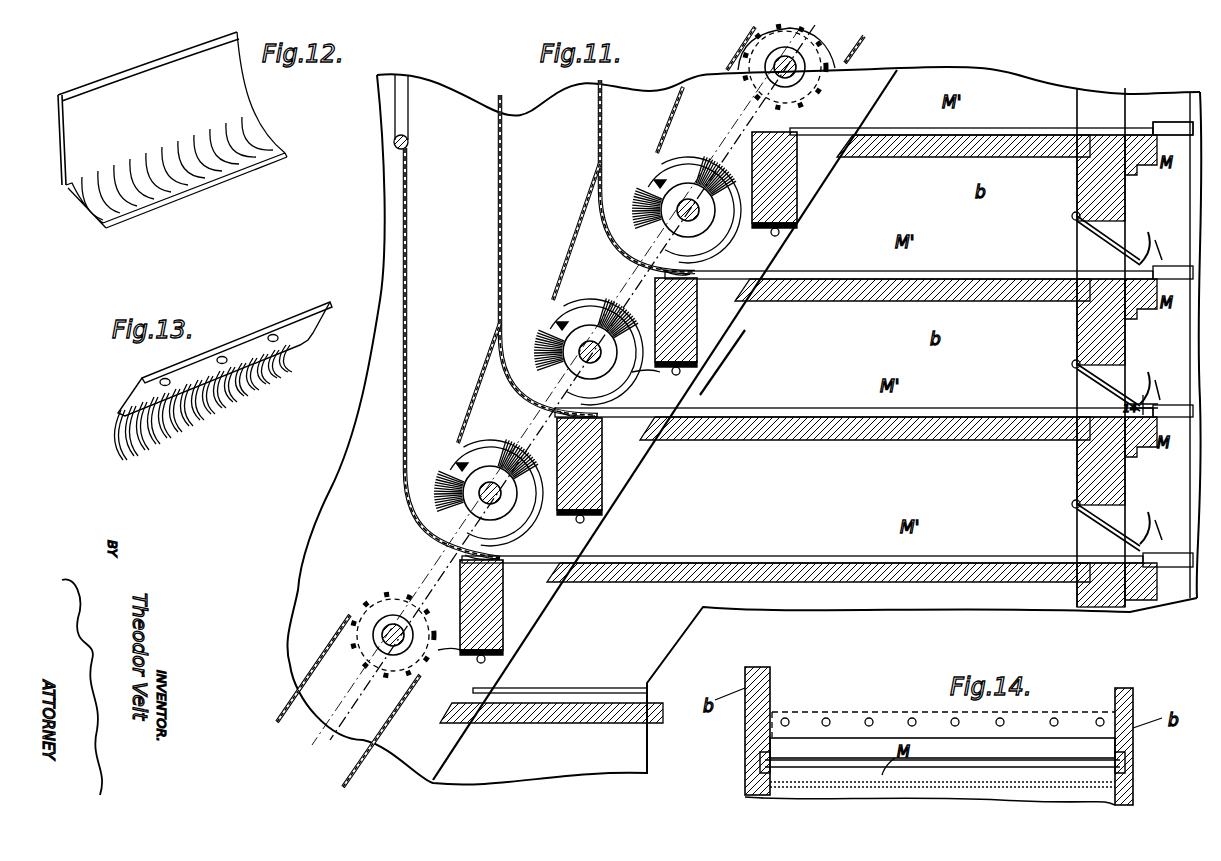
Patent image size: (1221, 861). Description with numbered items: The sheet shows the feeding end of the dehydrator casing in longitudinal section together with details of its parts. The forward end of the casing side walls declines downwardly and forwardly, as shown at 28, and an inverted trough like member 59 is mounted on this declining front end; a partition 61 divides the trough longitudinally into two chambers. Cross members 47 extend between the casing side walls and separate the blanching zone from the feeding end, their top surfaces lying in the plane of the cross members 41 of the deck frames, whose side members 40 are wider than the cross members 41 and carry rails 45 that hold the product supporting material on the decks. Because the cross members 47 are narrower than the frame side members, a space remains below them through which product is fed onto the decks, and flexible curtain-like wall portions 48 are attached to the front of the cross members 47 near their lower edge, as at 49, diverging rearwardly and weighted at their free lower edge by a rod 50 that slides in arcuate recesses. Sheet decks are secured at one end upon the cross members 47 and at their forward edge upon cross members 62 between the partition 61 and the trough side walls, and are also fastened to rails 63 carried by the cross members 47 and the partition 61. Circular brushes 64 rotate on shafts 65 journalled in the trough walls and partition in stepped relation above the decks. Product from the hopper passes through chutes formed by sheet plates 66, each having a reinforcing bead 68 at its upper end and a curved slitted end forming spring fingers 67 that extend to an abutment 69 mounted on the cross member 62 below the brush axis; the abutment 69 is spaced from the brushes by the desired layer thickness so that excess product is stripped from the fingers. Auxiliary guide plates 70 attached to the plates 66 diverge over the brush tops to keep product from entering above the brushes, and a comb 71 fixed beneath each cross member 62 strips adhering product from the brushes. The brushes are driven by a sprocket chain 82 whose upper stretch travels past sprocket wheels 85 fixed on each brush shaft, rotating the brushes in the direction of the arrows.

In FIG. 11, the declining forward end of the casing side walls 28 is at (722, 380).
In FIG. 11, the side members 40 is at (1159, 367).
In FIG. 11, the cross members 41 is at (1138, 176).
In FIG. 11, the rails 45 is at (1172, 122).
In FIG. 11, the cross members 47 is at (1080, 186).
In FIG. 14, the cross members 47 is at (812, 726).
In FIG. 11, the wall portions 48 is at (1110, 242).
In FIG. 14, the wall portions 48 is at (787, 750).
In FIG. 11, the attachment of wall portions 49 is at (1074, 216).
In FIG. 14, the attachment of wall portions 49 is at (903, 693).
In FIG. 11, the rod 50 is at (1150, 240).
In FIG. 14, the rod 50 is at (760, 768).
In FIG. 11, the trough like member 59 is at (360, 500).
In FIG. 11, the partition 61 is at (775, 252).
In FIG. 11, the cross members 62 is at (798, 192).
In FIG. 11, the rails 63 is at (885, 300).
In FIG. 11, the circular brushes 64 is at (660, 182).
In FIG. 11, the shafts 65 is at (790, 75).
In FIG. 12, the walls of sheet material 66 is at (172, 130).
In FIG. 11, the walls of sheet material 66 is at (410, 330).
In FIG. 12, the spring fingers 67 is at (220, 177).
In FIG. 11, the spring fingers 67 is at (662, 266).
In FIG. 11, the reinforcing bead 68 is at (396, 150).
In FIG. 11, the abutment 69 is at (790, 132).
In FIG. 11, the auxiliary guide plates 70 is at (672, 112).
In FIG. 13, the comb 71 is at (145, 397).
In FIG. 11, the comb 71 is at (660, 374).
In FIG. 11, the sprocket chain 82 is at (862, 55).
In FIG. 11, the sprocket wheels 85 is at (820, 45).